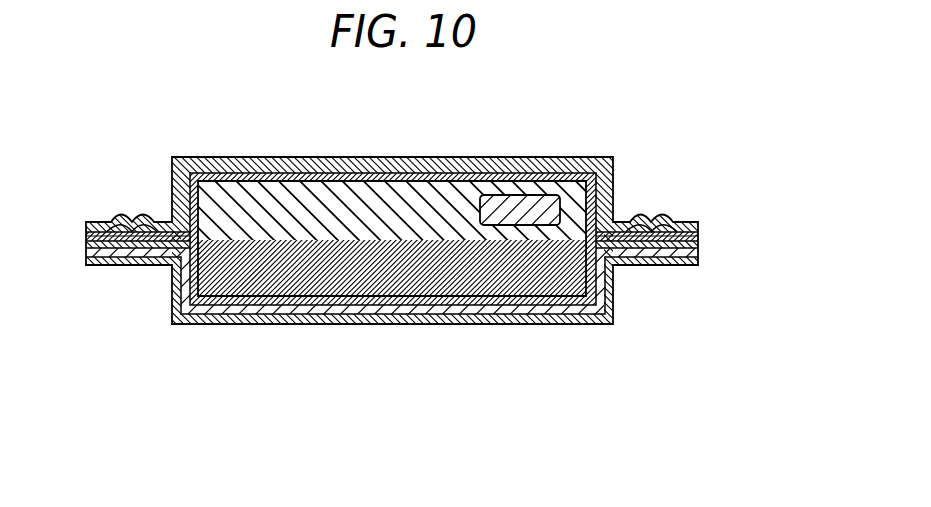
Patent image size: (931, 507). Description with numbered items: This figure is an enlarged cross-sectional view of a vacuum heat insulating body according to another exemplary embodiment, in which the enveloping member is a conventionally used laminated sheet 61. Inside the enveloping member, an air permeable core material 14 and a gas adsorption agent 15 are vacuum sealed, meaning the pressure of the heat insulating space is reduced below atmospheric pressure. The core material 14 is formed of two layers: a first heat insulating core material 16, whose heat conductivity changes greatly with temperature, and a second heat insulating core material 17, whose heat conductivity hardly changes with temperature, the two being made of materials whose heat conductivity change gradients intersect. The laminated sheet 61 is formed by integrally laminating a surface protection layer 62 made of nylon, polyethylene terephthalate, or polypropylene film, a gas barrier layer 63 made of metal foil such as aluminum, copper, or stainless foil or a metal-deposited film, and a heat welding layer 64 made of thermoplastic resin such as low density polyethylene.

The core material 14 is at (465, 253).
The first heat insulating core material 16 is at (315, 212).
The second heat insulating core material 17 is at (320, 279).
The gas adsorption agent 15 is at (540, 205).
The laminated sheet 61 is at (465, 253).
The surface protection layer 62 is at (522, 320).
The gas barrier layer 63 is at (455, 308).
The heat welding layer 64 is at (573, 398).